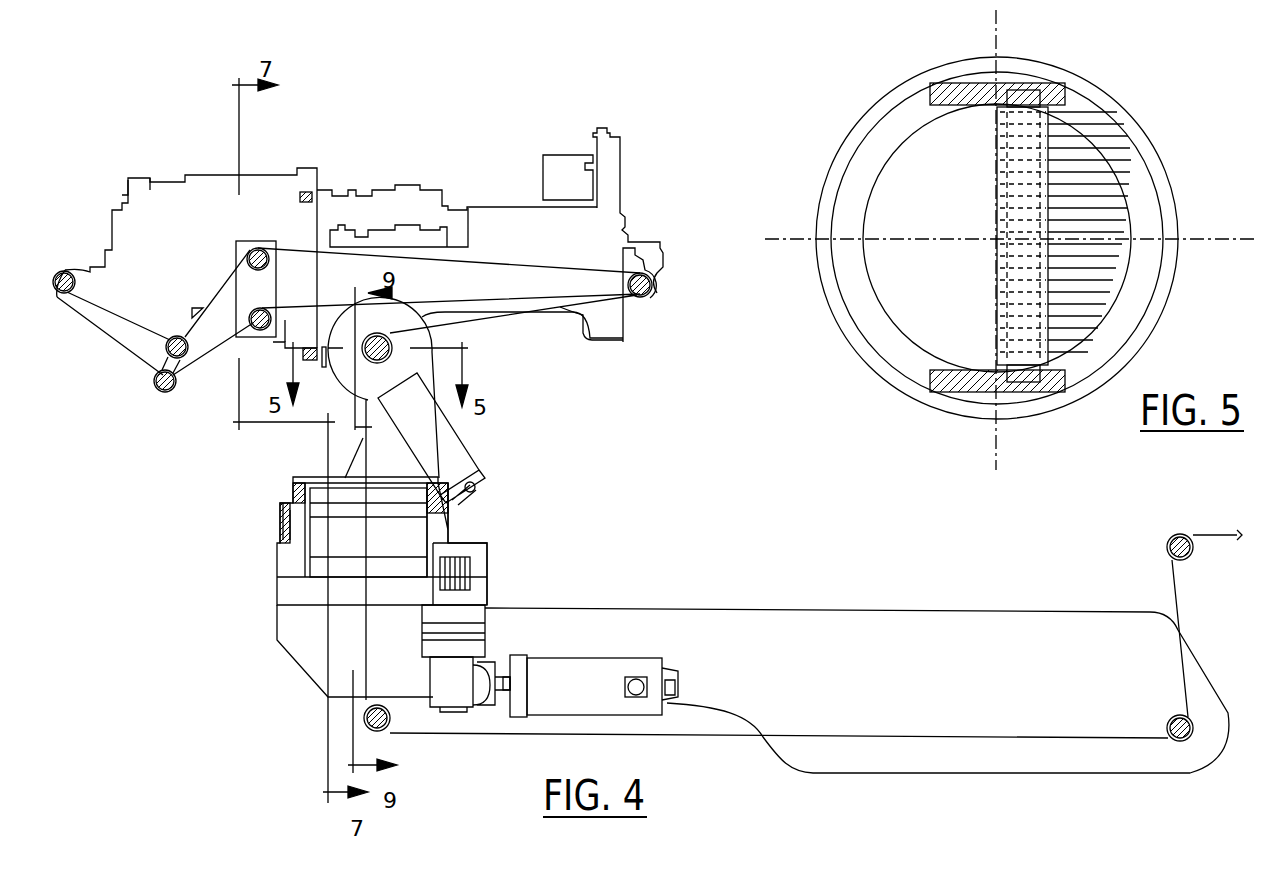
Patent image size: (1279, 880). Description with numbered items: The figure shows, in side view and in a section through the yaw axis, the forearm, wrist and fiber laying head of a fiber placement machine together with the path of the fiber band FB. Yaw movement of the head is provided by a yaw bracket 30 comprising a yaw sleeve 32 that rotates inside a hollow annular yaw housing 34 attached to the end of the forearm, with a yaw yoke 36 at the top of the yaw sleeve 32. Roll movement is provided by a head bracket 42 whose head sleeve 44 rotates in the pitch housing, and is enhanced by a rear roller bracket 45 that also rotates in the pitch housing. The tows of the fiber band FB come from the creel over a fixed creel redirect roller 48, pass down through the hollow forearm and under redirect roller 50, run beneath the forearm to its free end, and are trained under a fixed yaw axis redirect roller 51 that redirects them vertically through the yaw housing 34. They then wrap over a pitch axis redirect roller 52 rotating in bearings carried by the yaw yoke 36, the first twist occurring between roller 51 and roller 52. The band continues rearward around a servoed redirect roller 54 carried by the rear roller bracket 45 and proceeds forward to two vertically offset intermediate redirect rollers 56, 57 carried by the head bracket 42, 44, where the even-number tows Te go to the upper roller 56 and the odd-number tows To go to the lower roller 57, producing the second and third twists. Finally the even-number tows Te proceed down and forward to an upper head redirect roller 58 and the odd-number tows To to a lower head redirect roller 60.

In FIG. 4, the yaw bracket 30 is at (288, 488).
In FIG. 4, the yaw sleeve 32 is at (452, 512).
In FIG. 5, the yaw sleeve 32 is at (880, 342).
In FIG. 4, the yaw housing 34 is at (297, 640).
In FIG. 4, the yaw yoke 36 is at (372, 432).
In FIG. 5, the yaw yoke 36 is at (963, 90).
In FIG. 4, the head bracket 42 is at (268, 250).
In FIG. 4, the head sleeve 44 is at (250, 330).
In FIG. 4, the rear roller bracket 45 is at (627, 218).
In FIG. 4, the creel redirect roller 48 is at (1190, 558).
In FIG. 4, the redirect roller 50 is at (1170, 720).
In FIG. 4, the yaw axis redirect roller 51 is at (385, 703).
In FIG. 5, the yaw axis redirect roller 51 is at (1050, 356).
In FIG. 4, the pitch axis redirect roller 52 is at (387, 362).
In FIG. 5, the pitch axis redirect roller 52 is at (1047, 110).
In FIG. 4, the servoed redirect roller 54 is at (657, 293).
In FIG. 4, the intermediate redirect roller 56 is at (64, 271).
In FIG. 4, the intermediate redirect roller 57 is at (271, 320).
In FIG. 4, the upper head redirect roller 58 is at (172, 337).
In FIG. 4, the lower head redirect roller 60 is at (167, 392).
In FIG. 4, the fiber band FB is at (932, 735).
In FIG. 4, the even-number tows Te is at (537, 263).
In FIG. 4, the odd-number tows To is at (540, 285).